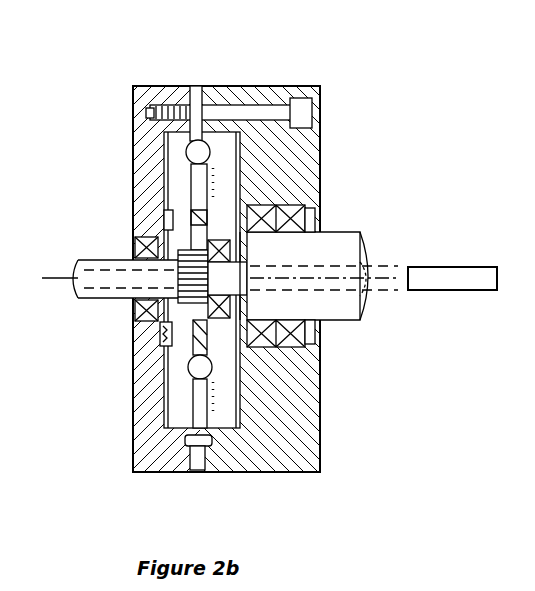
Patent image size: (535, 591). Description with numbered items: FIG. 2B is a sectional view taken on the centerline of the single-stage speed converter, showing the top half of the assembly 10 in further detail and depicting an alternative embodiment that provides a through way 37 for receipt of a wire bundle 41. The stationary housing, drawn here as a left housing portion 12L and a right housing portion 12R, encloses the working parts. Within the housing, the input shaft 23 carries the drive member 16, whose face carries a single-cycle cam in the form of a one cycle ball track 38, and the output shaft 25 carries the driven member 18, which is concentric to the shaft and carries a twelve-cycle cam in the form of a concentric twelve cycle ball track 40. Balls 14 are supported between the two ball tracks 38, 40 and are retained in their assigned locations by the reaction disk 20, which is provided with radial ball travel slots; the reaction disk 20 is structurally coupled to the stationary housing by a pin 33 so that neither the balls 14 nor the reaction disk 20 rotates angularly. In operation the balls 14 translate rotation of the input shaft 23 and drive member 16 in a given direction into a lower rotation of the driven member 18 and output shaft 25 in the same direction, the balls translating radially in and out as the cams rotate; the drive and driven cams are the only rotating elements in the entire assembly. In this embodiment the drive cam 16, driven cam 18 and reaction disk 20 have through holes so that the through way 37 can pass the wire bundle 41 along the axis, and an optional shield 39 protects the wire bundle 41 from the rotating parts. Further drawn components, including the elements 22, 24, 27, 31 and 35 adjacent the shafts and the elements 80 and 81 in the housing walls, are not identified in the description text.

The assembly 10 is at (214, 64).
The stationary housing 12L is at (131, 152).
The stationary housing 12R is at (318, 455).
The balls 14 is at (187, 367).
The drive member 16 is at (180, 415).
The driven member 18 is at (292, 395).
The reaction disk 20 is at (190, 88).
The input shaft bearing 22 is at (150, 252).
The input shaft 23 is at (105, 305).
The output shaft 24 is at (232, 292).
The output shaft 25 is at (340, 322).
The seal 27 is at (168, 217).
The retaining ring 31 is at (165, 322).
The pin 33 is at (185, 448).
The splined hub 35 is at (300, 250).
The through way 37 is at (352, 285).
The one cycle ball track 38 is at (148, 122).
The shield 39 is at (450, 266).
The twelve cycle ball track 40 is at (220, 183).
The wire bundle 41 is at (53, 274).
The bolt 80 is at (270, 86).
The lower dowel 81 is at (315, 360).